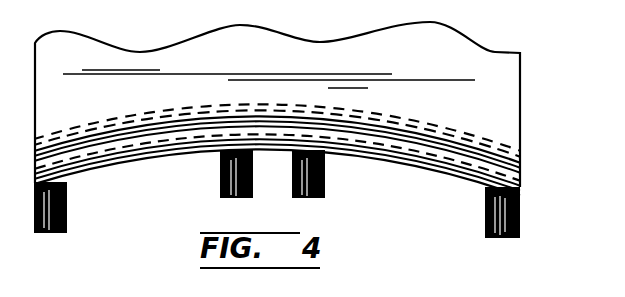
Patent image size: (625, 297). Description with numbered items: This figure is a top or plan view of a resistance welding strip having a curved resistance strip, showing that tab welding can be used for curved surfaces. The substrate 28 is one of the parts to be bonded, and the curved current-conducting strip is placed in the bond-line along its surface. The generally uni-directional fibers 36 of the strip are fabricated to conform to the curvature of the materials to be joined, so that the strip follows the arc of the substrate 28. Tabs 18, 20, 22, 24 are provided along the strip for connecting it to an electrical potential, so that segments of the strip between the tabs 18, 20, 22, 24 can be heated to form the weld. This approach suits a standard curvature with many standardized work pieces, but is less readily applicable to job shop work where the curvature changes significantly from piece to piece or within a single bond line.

The tab 18 is at (67, 211).
The tab 20 is at (220, 181).
The tab 22 is at (325, 182).
The tab 24 is at (486, 222).
The substrate 28 is at (497, 108).
The uni-directional fibers 36 is at (490, 157).